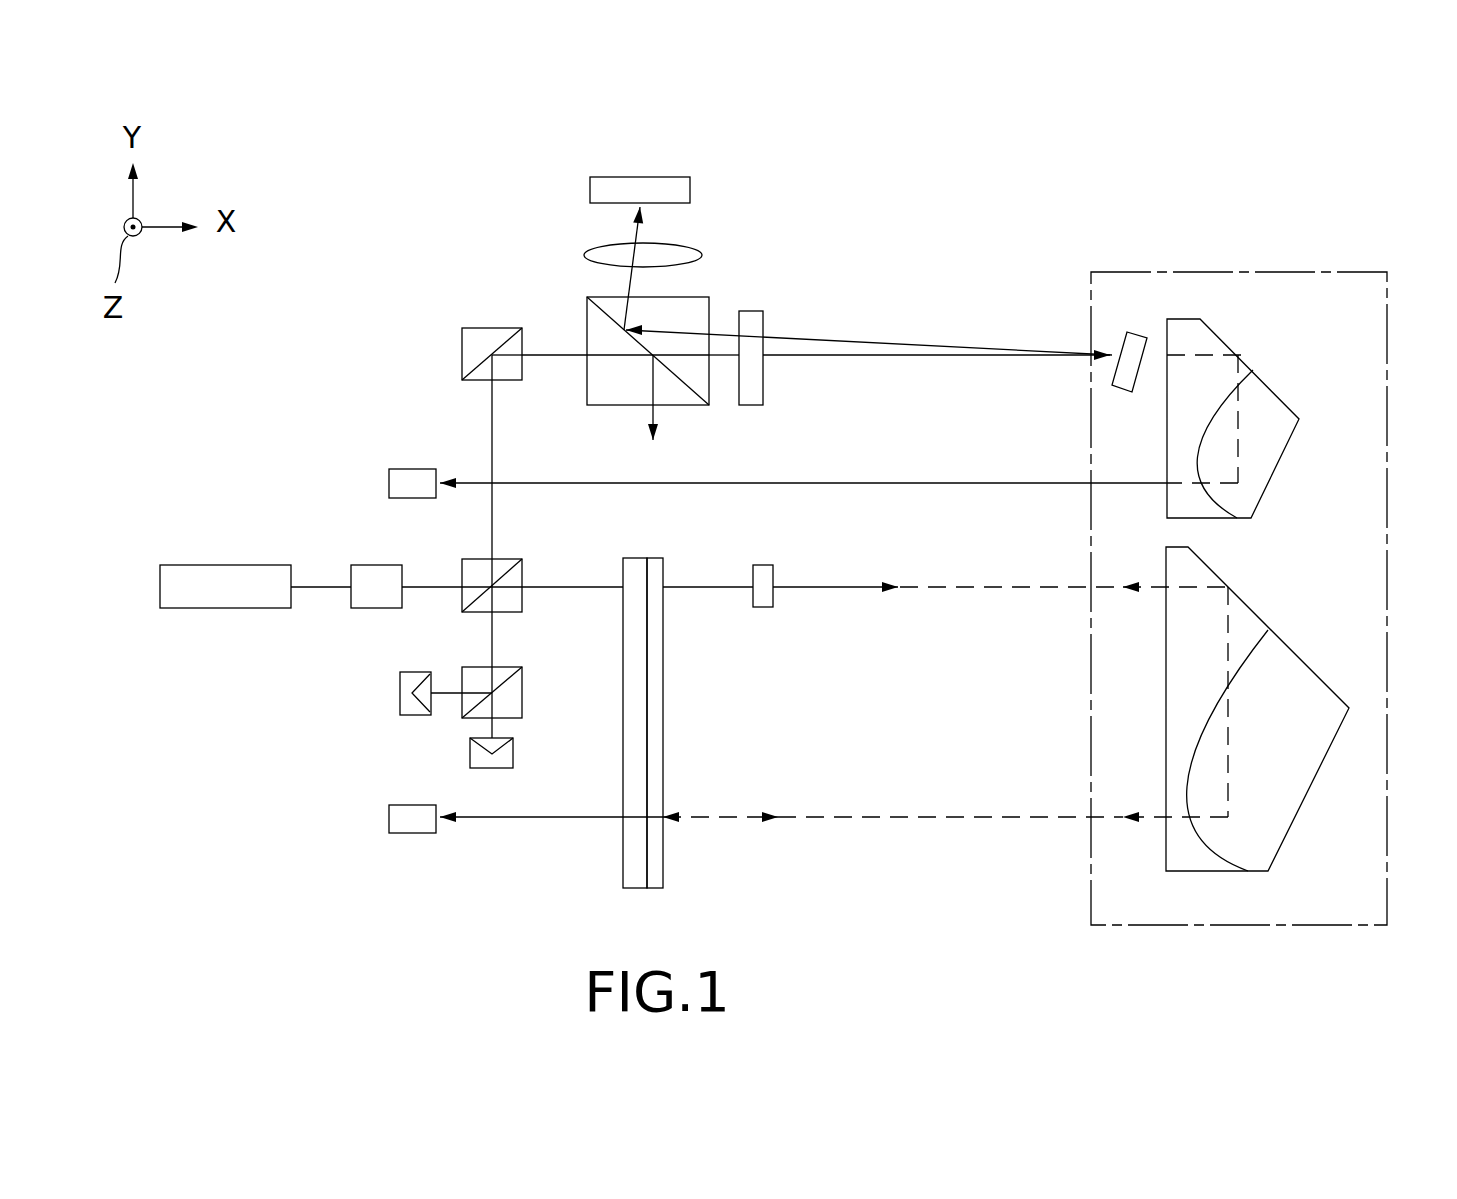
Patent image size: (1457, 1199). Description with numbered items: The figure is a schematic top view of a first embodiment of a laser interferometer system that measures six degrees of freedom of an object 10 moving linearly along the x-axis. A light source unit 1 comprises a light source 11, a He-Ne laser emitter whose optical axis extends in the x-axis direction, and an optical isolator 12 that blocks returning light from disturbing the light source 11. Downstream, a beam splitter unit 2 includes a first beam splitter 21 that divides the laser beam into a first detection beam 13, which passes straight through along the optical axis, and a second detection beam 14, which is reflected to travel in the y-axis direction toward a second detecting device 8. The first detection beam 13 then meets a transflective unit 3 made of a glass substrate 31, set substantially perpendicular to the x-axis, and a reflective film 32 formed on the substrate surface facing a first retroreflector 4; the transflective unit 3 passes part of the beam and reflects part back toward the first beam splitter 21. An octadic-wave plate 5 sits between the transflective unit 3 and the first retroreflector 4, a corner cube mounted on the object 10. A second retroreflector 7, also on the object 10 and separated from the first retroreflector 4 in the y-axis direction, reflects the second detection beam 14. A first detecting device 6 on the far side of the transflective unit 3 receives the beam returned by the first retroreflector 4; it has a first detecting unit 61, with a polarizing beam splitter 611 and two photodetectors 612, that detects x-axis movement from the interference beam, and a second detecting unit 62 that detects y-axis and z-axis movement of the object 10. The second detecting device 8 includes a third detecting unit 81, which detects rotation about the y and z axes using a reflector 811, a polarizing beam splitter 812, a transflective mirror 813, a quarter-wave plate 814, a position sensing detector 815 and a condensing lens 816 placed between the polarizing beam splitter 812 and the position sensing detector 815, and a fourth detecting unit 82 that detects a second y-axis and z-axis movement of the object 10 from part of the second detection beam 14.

The light source unit 1 is at (311, 524).
The light source 11 is at (219, 585).
The optical isolator 12 is at (364, 575).
The beam splitter unit 2 is at (527, 552).
The first beam splitter 21 is at (508, 565).
The first detection beam 13 is at (595, 587).
The second detection beam 14 is at (493, 432).
The transflective unit 3 is at (686, 723).
The glass substrate 31 is at (633, 757).
The reflective film 32 is at (653, 700).
The octadic-wave plate 5 is at (762, 568).
The first retroreflector 4 is at (1277, 610).
The second retroreflector 7 is at (1255, 352).
The object 10 is at (1332, 265).
The first detecting device 6 is at (441, 722).
The first detecting unit 61 is at (437, 709).
The polarizing beam splitter 611 is at (524, 695).
The photodetector 612 is at (401, 695).
The second detecting unit 62 is at (397, 820).
The second detecting device 8 is at (770, 306).
The third detecting unit 81 is at (787, 277).
The reflector 811 is at (480, 337).
The polarizing beam splitter 812 is at (585, 330).
The transflective mirror 813 is at (1133, 343).
The quarter-wave plate 814 is at (757, 326).
The position sensing detector 815 is at (614, 183).
The condensing lens 816 is at (612, 252).
The fourth detecting unit 82 is at (407, 480).